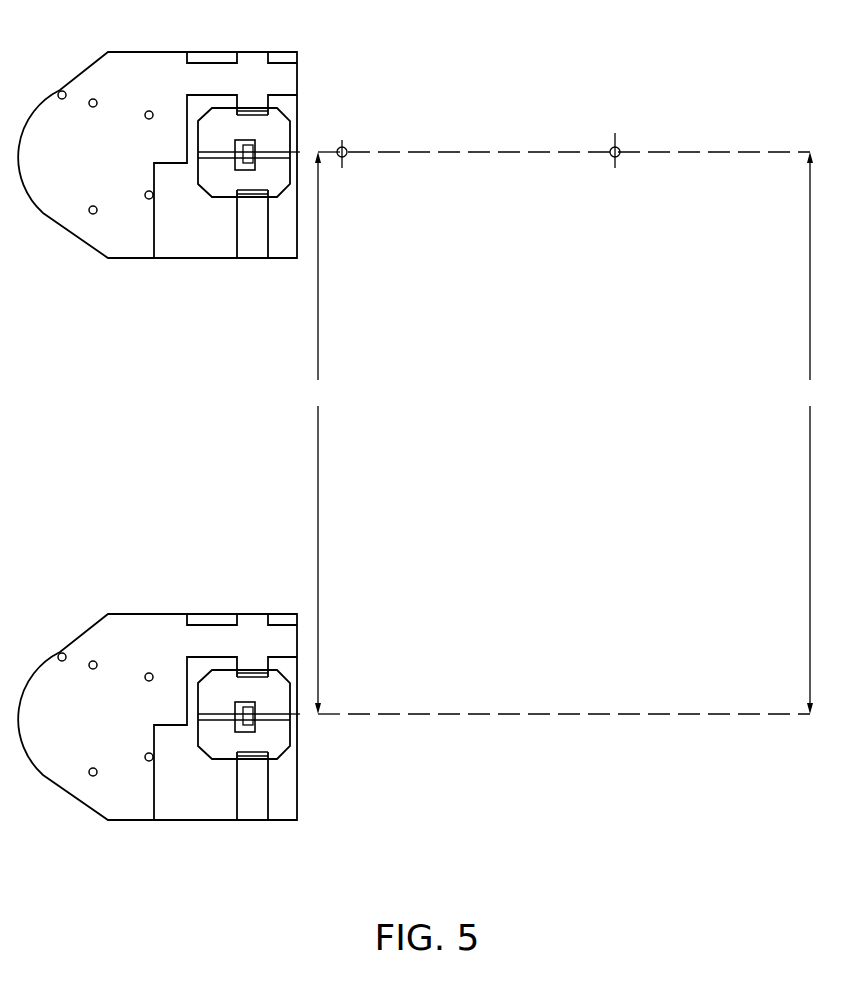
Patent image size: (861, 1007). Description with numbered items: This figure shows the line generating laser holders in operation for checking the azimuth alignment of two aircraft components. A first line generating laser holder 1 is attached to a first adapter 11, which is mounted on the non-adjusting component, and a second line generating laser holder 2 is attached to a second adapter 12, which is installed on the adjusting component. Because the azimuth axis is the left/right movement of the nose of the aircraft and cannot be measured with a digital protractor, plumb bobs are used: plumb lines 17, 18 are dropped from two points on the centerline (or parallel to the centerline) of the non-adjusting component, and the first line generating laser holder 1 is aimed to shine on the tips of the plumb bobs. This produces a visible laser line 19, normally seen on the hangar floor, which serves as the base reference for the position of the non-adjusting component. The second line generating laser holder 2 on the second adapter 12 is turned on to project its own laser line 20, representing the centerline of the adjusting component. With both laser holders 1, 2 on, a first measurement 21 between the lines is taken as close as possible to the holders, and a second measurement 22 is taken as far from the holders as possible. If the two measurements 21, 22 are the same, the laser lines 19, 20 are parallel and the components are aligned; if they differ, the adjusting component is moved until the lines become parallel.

The first line generating laser holder 1 is at (218, 183).
The second line generating laser holder 2 is at (220, 745).
The first adapter 11 is at (157, 60).
The second adapter 12 is at (138, 622).
The plumb line 17 is at (342, 140).
The plumb line 18 is at (615, 133).
The visible laser line 19 is at (720, 152).
The laser line 20 is at (540, 714).
The first measurement 21 is at (317, 433).
The second measurement 22 is at (808, 433).